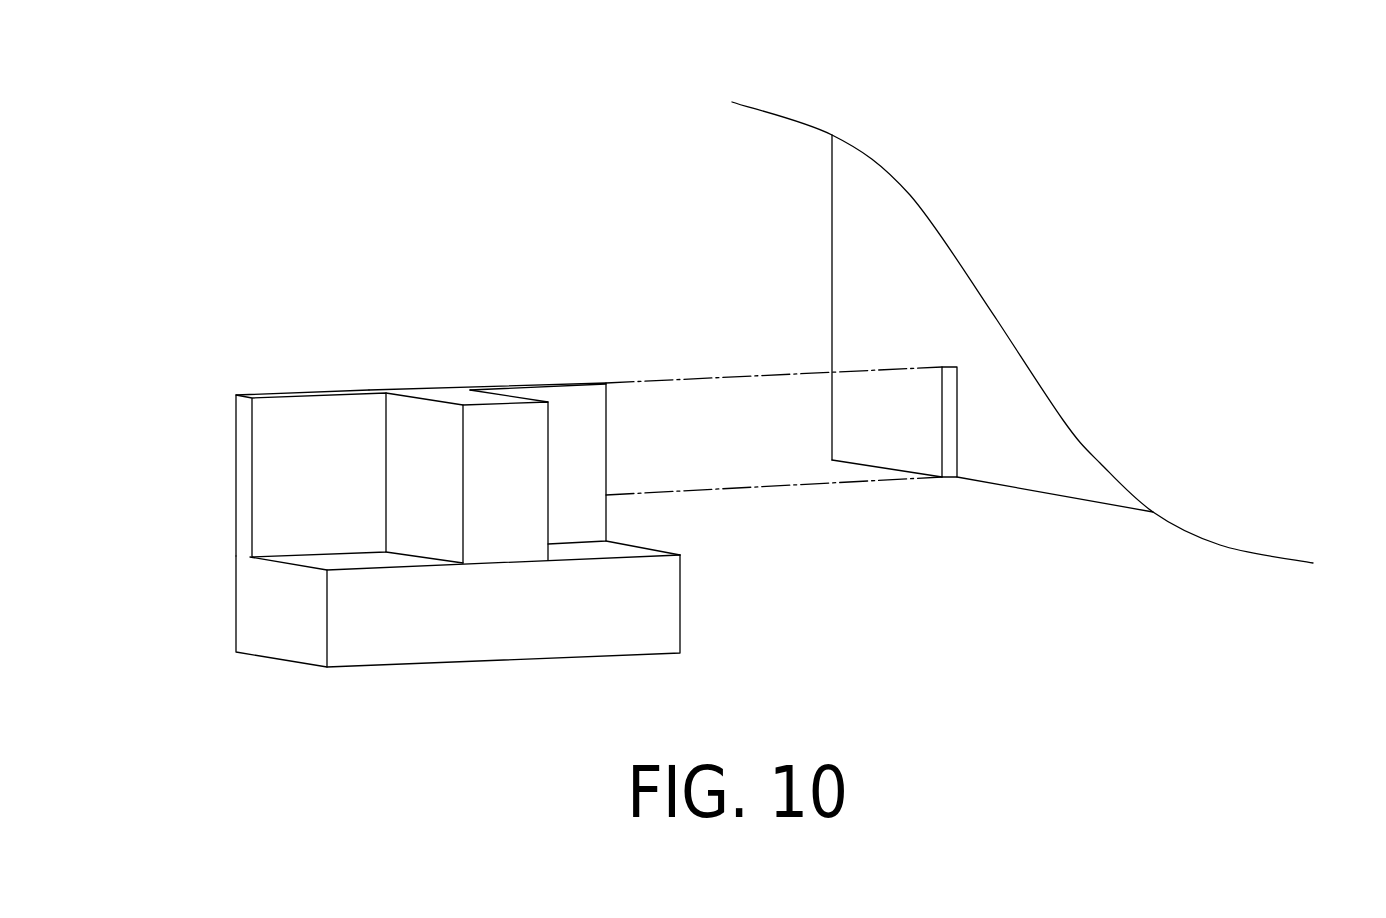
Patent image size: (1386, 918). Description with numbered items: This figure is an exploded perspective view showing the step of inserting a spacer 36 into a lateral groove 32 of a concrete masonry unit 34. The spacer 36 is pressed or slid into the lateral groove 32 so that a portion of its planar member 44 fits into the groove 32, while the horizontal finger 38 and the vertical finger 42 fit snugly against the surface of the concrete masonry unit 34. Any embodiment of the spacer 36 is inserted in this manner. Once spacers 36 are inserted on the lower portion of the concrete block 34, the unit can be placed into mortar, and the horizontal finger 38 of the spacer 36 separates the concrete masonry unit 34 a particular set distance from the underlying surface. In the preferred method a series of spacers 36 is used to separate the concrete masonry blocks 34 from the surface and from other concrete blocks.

The lateral groove 32 is at (879, 356).
The concrete masonry unit 34 is at (1022, 332).
The spacer 36 is at (403, 477).
The horizontal finger 38 is at (458, 641).
The vertical finger 42 is at (496, 427).
The planar member 44 is at (256, 473).